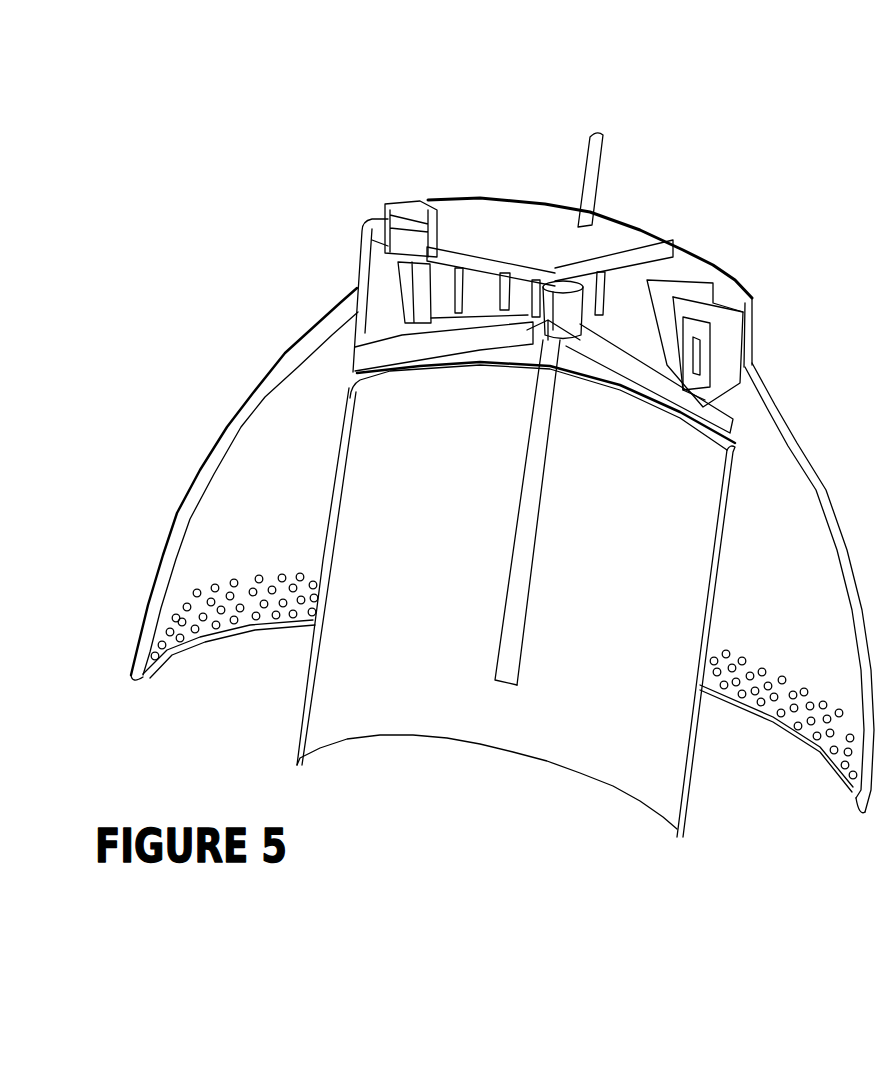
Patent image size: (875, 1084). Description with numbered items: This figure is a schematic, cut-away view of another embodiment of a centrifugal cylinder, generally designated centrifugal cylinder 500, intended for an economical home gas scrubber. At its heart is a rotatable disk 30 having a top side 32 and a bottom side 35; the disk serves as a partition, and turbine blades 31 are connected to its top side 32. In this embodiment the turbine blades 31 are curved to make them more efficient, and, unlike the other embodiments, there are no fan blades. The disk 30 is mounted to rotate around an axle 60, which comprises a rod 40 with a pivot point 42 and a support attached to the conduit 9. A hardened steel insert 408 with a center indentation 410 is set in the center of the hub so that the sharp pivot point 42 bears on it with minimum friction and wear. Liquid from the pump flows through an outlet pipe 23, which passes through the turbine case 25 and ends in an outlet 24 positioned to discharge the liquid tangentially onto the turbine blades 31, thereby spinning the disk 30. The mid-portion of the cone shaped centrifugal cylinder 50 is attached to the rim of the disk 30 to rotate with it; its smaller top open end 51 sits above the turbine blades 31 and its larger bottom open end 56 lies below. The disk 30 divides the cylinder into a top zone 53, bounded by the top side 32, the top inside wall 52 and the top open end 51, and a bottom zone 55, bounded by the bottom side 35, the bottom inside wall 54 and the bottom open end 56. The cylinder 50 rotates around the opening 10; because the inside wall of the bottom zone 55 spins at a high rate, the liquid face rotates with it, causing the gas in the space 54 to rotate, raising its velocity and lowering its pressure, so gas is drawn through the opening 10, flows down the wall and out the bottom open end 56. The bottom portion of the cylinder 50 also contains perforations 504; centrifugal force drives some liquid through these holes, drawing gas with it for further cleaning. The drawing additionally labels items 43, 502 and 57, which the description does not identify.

The centrifugal cylinder 500 is at (312, 230).
The outlet pipe 23 is at (387, 203).
The outlet 24 is at (423, 207).
The turbine case 25 is at (488, 233).
The center indentation 410 is at (560, 303).
The insert 408 is at (567, 280).
The locating pin 43 is at (613, 150).
The top open end 51 is at (728, 249).
The rotatable disk 30 is at (688, 258).
The top inside wall 52 is at (697, 266).
The top zone 53 is at (730, 297).
The turbine blades 31 is at (732, 325).
The top side 32 is at (752, 365).
The cylinder notch 502 is at (743, 448).
The opening 10 is at (423, 393).
The pivot point 42 is at (548, 330).
The bottom side 35 is at (593, 377).
The axle 60 is at (547, 462).
The rod 40 is at (502, 612).
The conduit 9 is at (652, 748).
The perforations 504 is at (820, 748).
The cone shaped centrifugal cylinder 50 is at (223, 425).
The bottom inside wall 54 is at (259, 488).
The bottom zone 55 is at (170, 578).
The dome bottom rim 57 is at (130, 681).
The bottom open end 56 is at (240, 660).